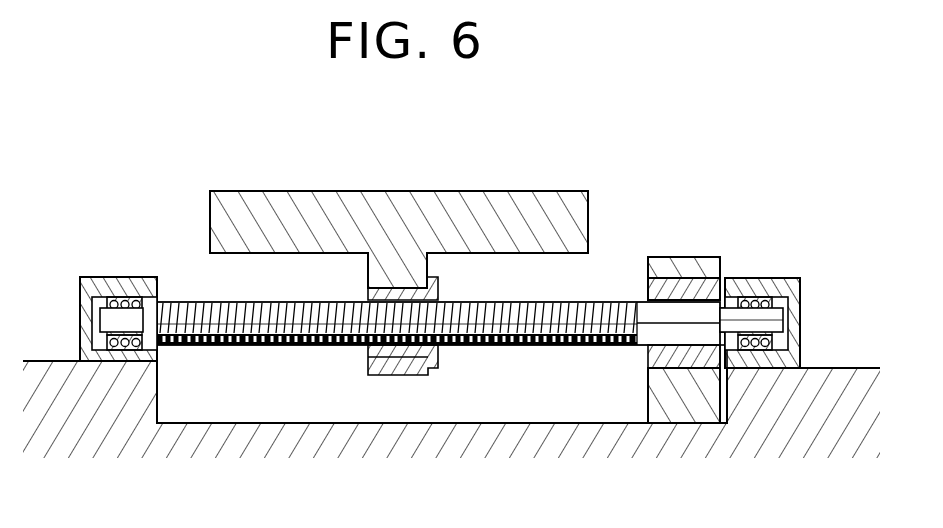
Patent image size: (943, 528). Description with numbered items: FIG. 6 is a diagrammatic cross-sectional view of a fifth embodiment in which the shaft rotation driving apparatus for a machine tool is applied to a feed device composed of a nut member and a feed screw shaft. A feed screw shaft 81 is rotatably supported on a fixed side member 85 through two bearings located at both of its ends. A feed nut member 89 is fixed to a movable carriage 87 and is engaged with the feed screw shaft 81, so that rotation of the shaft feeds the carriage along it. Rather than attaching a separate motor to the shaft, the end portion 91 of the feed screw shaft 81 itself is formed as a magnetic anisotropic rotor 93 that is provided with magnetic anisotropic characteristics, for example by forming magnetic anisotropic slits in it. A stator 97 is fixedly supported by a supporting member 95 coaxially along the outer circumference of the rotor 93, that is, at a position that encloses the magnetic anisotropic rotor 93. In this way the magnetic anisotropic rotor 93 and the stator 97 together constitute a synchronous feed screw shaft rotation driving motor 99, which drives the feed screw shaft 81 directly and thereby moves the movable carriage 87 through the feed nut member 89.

The feed screw shaft 81 is at (500, 346).
The fixed side member 85 is at (845, 377).
The movable carriage 87 is at (430, 191).
The feed nut member 89 is at (440, 289).
The end portion 91 is at (665, 328).
The magnetic anisotropic rotor 93 is at (730, 370).
The supporting member 95 is at (701, 264).
The stator 97 is at (670, 278).
The synchronous feed screw shaft rotation driving motor 99 is at (742, 265).